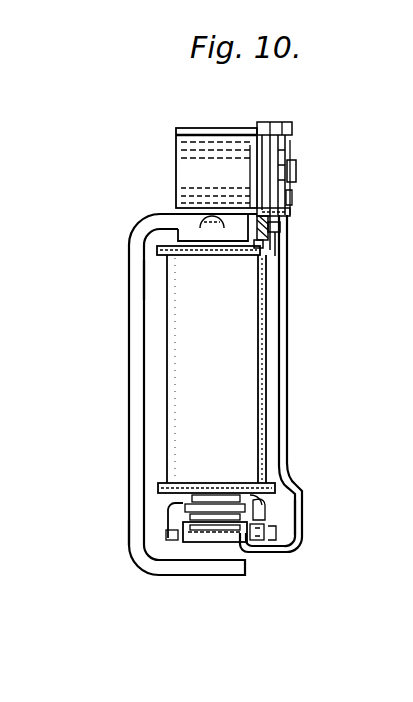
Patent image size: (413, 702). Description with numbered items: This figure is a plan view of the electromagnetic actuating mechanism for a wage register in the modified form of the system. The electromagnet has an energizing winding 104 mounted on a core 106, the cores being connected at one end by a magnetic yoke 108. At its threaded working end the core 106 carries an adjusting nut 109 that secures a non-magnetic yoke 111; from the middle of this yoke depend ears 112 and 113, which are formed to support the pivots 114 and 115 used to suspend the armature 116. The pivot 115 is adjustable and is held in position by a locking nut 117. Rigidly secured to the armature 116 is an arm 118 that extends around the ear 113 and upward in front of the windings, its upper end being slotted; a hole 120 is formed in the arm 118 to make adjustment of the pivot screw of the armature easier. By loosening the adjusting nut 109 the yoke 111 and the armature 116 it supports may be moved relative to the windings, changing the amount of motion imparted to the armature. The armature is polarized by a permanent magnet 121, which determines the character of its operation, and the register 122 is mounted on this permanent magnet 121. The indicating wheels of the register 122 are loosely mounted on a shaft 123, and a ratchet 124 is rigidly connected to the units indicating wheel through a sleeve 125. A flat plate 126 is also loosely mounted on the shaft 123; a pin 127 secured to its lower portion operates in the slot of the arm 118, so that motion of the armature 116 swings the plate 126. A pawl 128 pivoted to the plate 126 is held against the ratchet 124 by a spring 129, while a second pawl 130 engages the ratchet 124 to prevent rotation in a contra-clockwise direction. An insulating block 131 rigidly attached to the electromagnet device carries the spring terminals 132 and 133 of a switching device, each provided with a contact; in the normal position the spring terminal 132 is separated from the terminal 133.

The energizing winding 104 is at (250, 340).
The core 106 is at (147, 250).
The magnetic yoke 108 is at (198, 233).
The adjusting nut 109 is at (121, 493).
The non-magnetic yoke 111 is at (279, 487).
The ear 112 is at (162, 553).
The ear 113 is at (266, 516).
The pivot 114 is at (176, 541).
The pivot 115 is at (262, 548).
The armature 116 is at (216, 542).
The locking nut 117 is at (303, 553).
The arm 118 is at (288, 372).
The hole 120 is at (301, 528).
The permanent magnet 121 is at (135, 385).
The register 122 is at (178, 158).
The shaft 123 is at (288, 156).
The ratchet 124 is at (295, 172).
The sleeve 125 is at (283, 141).
The flat plate 126 is at (286, 214).
The pin 127 is at (281, 231).
The pawl 128 is at (286, 197).
The spring 129 is at (306, 195).
The second pawl 130 is at (287, 128).
The insulating block 131 is at (266, 252).
The spring terminal 132 is at (279, 229).
The spring terminal 133 is at (271, 246).